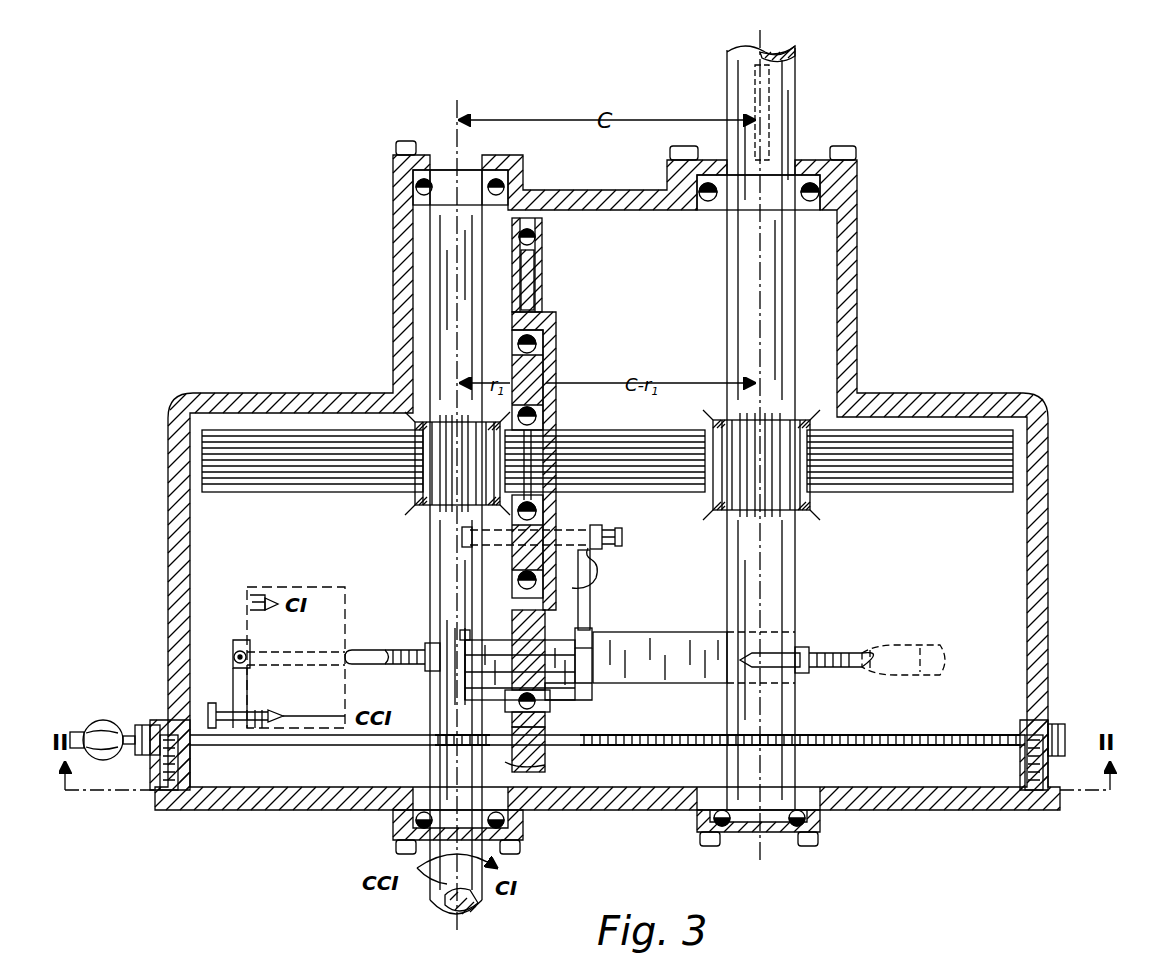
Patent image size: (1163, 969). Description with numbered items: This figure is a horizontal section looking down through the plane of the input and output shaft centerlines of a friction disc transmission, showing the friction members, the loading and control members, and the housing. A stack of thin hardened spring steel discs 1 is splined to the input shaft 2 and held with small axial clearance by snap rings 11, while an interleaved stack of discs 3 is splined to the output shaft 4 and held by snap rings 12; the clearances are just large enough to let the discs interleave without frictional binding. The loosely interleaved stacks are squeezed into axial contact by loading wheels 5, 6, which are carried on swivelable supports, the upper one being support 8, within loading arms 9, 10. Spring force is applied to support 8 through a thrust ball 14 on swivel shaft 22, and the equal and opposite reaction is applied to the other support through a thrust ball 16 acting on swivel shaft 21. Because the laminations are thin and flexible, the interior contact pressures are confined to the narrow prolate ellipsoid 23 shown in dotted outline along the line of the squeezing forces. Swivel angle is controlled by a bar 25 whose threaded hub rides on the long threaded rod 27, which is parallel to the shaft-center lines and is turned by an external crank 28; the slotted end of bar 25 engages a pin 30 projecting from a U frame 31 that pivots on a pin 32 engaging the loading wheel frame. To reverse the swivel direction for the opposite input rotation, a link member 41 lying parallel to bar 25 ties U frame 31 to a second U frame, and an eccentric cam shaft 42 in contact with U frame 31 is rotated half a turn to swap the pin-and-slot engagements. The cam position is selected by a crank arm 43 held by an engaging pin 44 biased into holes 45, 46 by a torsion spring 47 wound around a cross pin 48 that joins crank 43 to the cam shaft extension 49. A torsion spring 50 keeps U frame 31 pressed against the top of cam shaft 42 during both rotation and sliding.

The stack of thin hardened spring steel discs 1 is at (325, 495).
The input shaft 2 is at (430, 572).
The stack of discs 3 is at (617, 430).
The output shaft 4 is at (725, 282).
The loading wheel 5 is at (512, 588).
The loading wheel 6 is at (512, 338).
The swivelable support 8 is at (552, 318).
The loading arm 9 is at (555, 705).
The loading arm 10 is at (542, 292).
The snap rings 11 is at (425, 432).
The snap rings 12 is at (713, 495).
The thrust ball 14 is at (537, 237).
The thrust ball 16 is at (470, 688).
The swivel shaft 21 is at (592, 640).
The swivel shaft 22 is at (535, 265).
The ellipsoid of surface pressures 23 is at (531, 470).
The bar 25 is at (545, 755).
The threaded rod 27 is at (695, 735).
The external crank 28 is at (110, 722).
The pin 30 is at (520, 655).
The U frame 31 is at (592, 598).
The pin 32 is at (622, 537).
The link member 41 is at (596, 694).
The eccentric cam shaft 42 is at (705, 632).
The crank arm 43 is at (232, 700).
The engaging pin 44 is at (260, 716).
The hole 45 is at (283, 716).
The hole 46 is at (268, 612).
The torsion spring 47 is at (240, 640).
The cross pin 48 is at (234, 655).
The cam shaft extension 49 is at (386, 652).
The torsion spring 50 is at (600, 567).